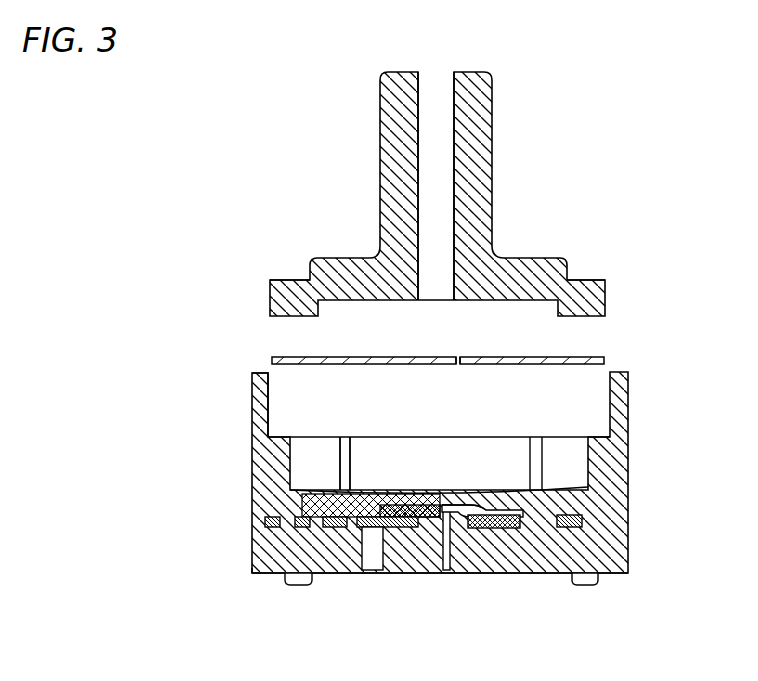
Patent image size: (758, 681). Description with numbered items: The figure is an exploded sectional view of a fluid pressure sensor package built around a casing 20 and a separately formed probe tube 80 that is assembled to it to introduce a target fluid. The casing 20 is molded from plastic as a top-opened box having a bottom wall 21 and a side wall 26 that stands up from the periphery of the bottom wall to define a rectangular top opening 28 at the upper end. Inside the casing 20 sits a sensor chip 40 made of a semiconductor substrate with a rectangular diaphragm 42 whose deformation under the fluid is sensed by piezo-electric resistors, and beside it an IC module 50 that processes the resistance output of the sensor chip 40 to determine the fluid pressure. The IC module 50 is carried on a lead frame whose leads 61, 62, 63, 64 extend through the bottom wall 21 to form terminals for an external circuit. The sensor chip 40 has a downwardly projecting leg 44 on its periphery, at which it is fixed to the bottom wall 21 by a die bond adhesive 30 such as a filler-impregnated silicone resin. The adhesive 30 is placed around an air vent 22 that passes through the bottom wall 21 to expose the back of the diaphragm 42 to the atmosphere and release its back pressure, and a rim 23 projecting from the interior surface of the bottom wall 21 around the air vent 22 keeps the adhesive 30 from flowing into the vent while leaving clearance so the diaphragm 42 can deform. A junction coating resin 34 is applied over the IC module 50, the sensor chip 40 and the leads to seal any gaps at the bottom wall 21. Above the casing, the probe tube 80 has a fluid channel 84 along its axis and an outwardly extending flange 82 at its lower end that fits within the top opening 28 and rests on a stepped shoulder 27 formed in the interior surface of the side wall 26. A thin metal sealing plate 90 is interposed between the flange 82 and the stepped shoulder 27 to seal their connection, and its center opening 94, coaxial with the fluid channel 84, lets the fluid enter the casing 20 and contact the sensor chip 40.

The casing 20 is at (250, 569).
The bottom wall 21 is at (405, 560).
The air vent 22 is at (442, 528).
The rim 23 is at (458, 528).
The side wall 26 is at (632, 462).
The stepped shoulder 27 is at (275, 437).
The top opening 28 is at (572, 387).
The die bond adhesive 30 is at (478, 494).
The junction coating resin 34 is at (365, 495).
The sensor chip 40 is at (472, 512).
The diaphragm 42 is at (450, 505).
The leg 44 is at (482, 512).
The IC module 50 is at (396, 506).
The lead 61 is at (272, 528).
The lead 62 is at (303, 528).
The lead 63 is at (335, 528).
The lead 64 is at (582, 522).
The probe tube 80 is at (489, 82).
The flange 82 is at (285, 288).
The fluid channel 84 is at (433, 150).
The sealing plate 90 is at (288, 357).
The center opening 94 is at (456, 357).